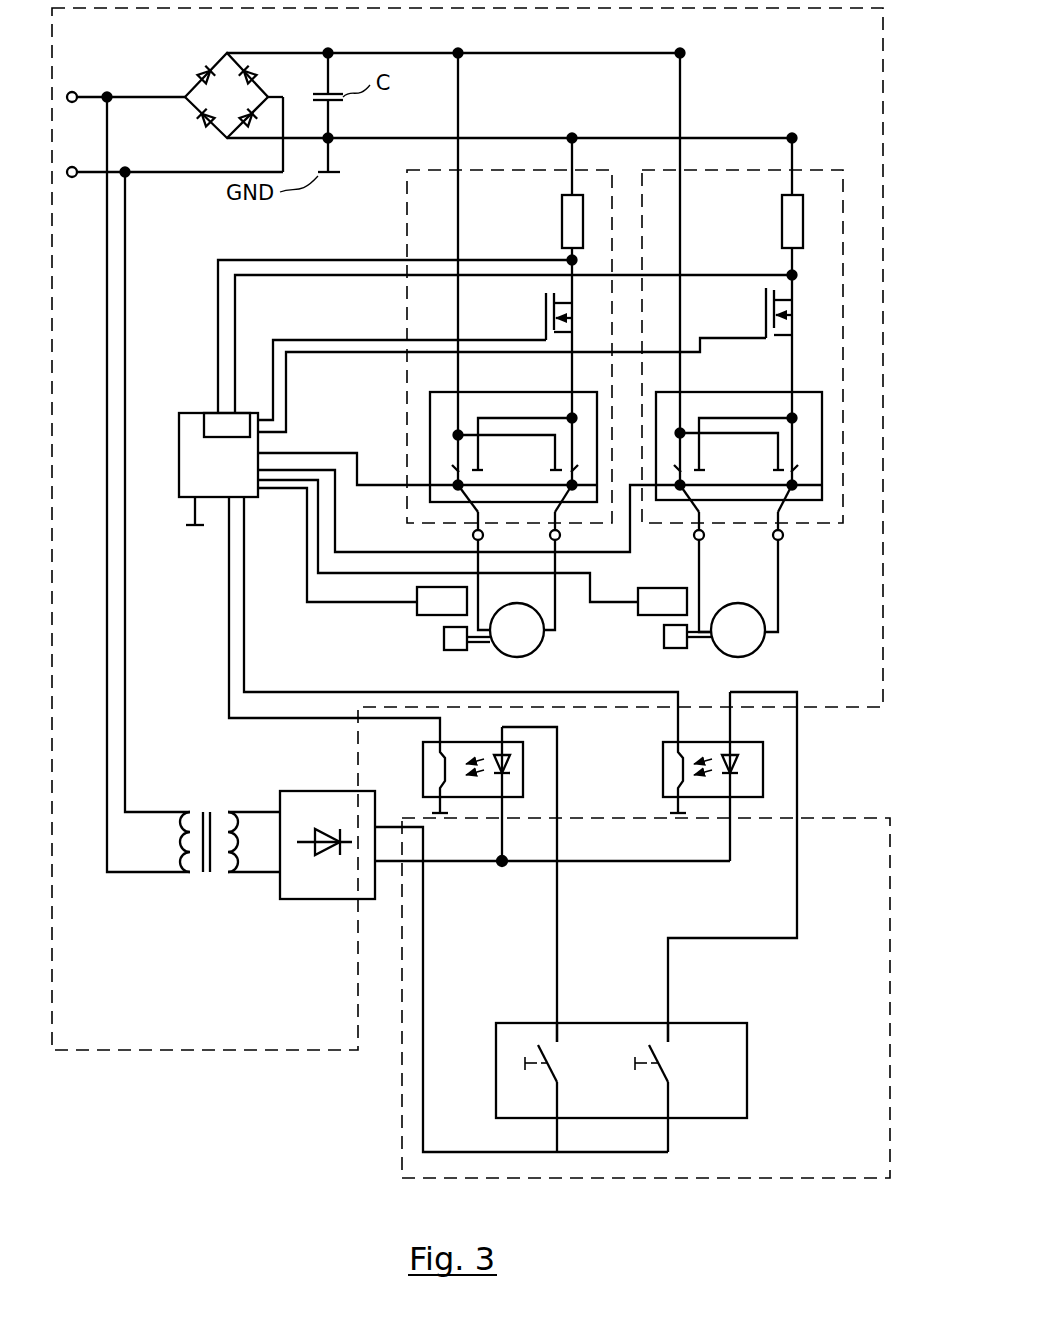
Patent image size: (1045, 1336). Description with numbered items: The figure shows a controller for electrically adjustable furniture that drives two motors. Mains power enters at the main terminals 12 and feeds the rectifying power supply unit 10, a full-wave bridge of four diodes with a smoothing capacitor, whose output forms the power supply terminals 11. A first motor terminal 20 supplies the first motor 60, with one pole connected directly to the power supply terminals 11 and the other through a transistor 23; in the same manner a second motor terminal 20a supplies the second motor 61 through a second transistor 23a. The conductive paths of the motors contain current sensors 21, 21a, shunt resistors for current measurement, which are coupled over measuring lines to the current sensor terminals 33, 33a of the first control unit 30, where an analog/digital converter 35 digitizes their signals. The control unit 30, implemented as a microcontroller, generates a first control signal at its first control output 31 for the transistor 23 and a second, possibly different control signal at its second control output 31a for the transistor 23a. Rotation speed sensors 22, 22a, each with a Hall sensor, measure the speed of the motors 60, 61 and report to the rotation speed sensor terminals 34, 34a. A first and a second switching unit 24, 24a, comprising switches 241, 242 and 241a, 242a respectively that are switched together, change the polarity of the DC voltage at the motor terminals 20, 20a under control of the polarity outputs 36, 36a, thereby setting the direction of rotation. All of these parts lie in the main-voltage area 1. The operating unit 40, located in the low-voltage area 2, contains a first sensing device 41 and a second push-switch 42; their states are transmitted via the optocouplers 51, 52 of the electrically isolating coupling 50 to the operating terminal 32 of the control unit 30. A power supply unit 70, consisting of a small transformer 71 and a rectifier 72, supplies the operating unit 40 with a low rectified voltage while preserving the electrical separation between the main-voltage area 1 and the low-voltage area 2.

The main-voltage area 1 is at (883, 62).
The low-voltage area 2 is at (890, 835).
The rectifying power supply unit 10 is at (181, 64).
The power supply terminals 11 is at (460, 57).
The main terminals 12 is at (78, 92).
The first motor terminal 20 is at (472, 537).
The second motor terminal 20a is at (703, 540).
The first current sensor 21 is at (562, 218).
The second current sensor 21a is at (782, 213).
The first rotation speed sensor 22 is at (422, 636).
The second rotation speed sensor 22a is at (647, 633).
The first transistor 23 is at (558, 338).
The second transistor 23a is at (784, 338).
The first switching unit 24 is at (430, 396).
The second switching unit 24a is at (817, 392).
The first control unit 30 is at (179, 465).
The first control output 31 is at (265, 418).
The second control output 31a is at (262, 432).
The operating terminal 32 is at (229, 505).
The first current sensor terminal 33 is at (216, 410).
The second current sensor terminal 33a is at (237, 410).
The first rotation speed sensor terminal 34 is at (245, 502).
The second rotation speed sensor terminal 34a is at (257, 500).
The analog/digital converter 35 is at (204, 425).
The first polarity output 36 is at (262, 455).
The second polarity output 36a is at (262, 475).
The operating unit 40 is at (663, 1070).
The first sensing device 41 is at (668, 1072).
The second push-switch 42 is at (557, 1072).
The electrically isolating coupling 50 is at (645, 777).
The optocoupler 51 is at (663, 786).
The optocoupler 52 is at (523, 797).
The first motor 60 is at (532, 654).
The second motor 61 is at (766, 638).
The power supply unit 70 is at (267, 867).
The transformer 71 is at (203, 794).
The rectifier 72 is at (325, 897).
The switch 241 is at (470, 482).
The switch 242 is at (566, 482).
The switch 241a is at (692, 480).
The switch 242a is at (784, 486).